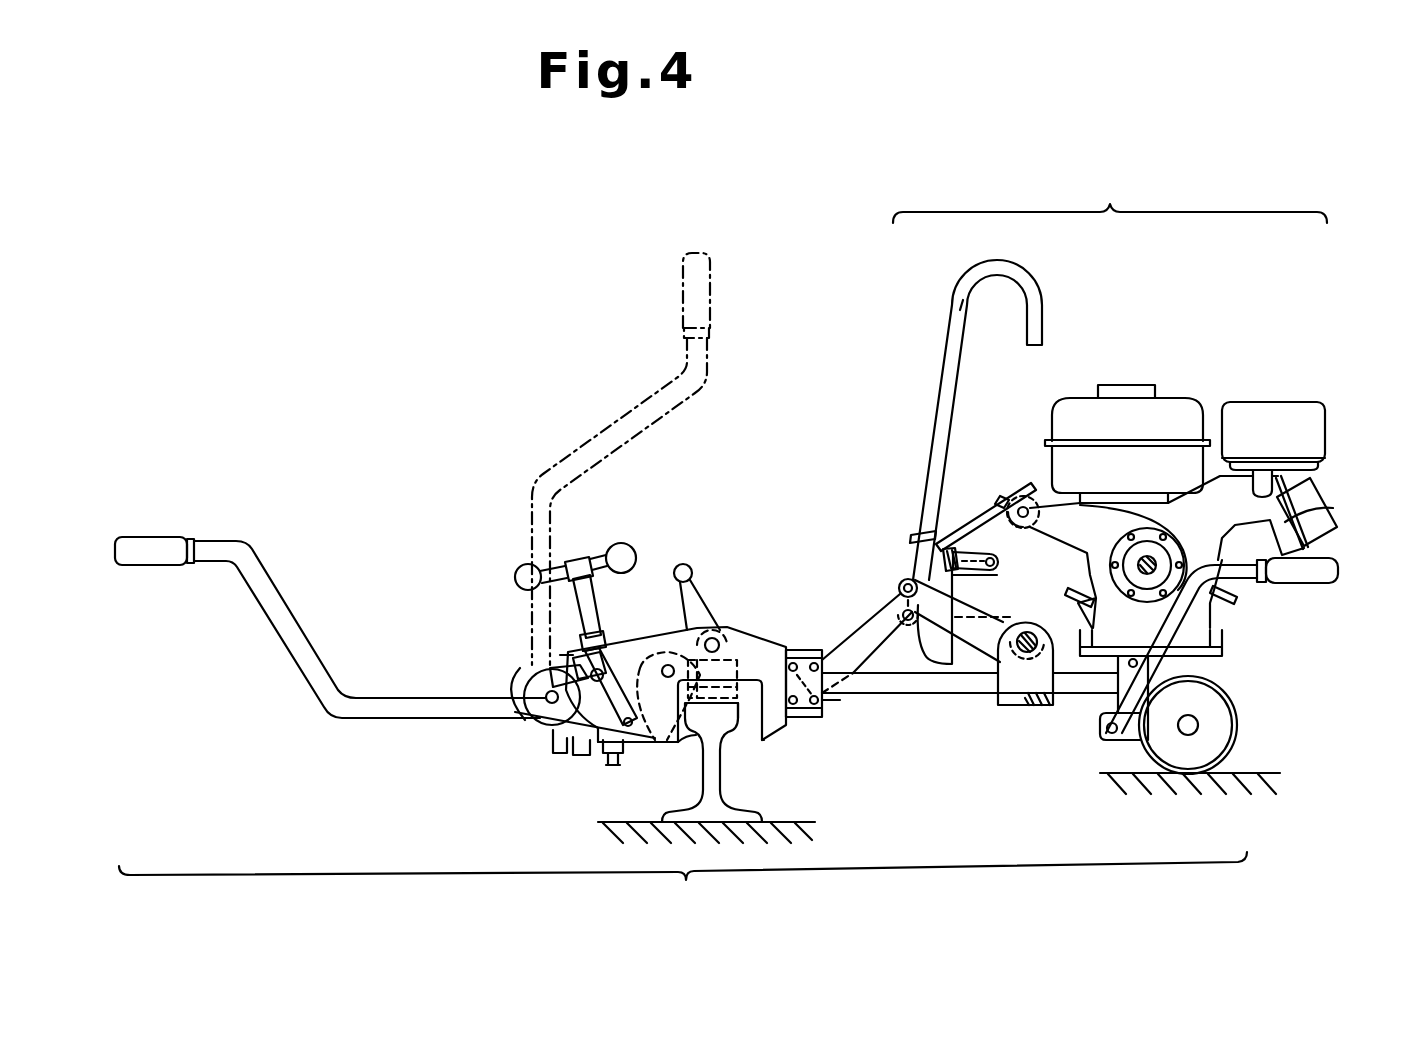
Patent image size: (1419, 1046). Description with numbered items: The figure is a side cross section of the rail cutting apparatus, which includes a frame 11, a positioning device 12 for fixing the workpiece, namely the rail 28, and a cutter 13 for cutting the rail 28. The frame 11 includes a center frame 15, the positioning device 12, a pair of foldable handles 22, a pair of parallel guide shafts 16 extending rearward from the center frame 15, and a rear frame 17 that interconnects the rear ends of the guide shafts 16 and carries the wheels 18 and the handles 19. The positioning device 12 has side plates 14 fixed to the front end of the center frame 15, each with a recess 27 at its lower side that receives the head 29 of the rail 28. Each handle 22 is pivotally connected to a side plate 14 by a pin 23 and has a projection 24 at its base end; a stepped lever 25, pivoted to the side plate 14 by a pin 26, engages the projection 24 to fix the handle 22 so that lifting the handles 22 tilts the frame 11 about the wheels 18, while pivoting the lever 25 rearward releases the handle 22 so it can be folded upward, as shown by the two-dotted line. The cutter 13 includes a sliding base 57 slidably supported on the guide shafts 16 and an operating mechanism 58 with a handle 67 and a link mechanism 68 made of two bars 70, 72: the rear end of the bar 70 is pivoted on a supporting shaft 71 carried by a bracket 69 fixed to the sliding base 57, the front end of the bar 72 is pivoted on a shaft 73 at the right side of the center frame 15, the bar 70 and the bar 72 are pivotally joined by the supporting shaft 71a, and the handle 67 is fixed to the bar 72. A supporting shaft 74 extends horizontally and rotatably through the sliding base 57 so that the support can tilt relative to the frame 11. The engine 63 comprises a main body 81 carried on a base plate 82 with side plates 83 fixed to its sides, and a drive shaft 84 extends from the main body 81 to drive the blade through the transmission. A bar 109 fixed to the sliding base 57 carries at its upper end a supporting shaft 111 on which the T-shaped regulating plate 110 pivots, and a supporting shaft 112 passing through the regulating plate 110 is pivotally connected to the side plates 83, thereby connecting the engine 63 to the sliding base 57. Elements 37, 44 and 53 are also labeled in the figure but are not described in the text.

The frame 11 is at (683, 887).
The positioning device 12 is at (783, 732).
The cutter 13 is at (1110, 192).
The side plate 14 is at (765, 642).
The center frame 15 is at (848, 703).
The guide shaft 16 is at (875, 700).
The rear frame 17 is at (1110, 685).
The wheel 18 is at (1225, 740).
The handle 19 is at (1107, 742).
The foldable handle 22 is at (585, 437).
The pin 23 is at (535, 720).
The projection 24 is at (548, 742).
The lever 25 is at (618, 652).
The pin 26 is at (628, 748).
The recess 27 is at (745, 742).
The rail 28 is at (700, 801).
The head 29 is at (727, 722).
The jaw plate 37 is at (683, 750).
The operating lever 44 is at (596, 604).
The lock lever 53 is at (704, 590).
The sliding base 57 is at (1000, 706).
The operating mechanism 58 is at (912, 533).
The engine 63 is at (1210, 392).
The handle 67 is at (948, 324).
The link mechanism 68 is at (856, 632).
The bracket 69 is at (930, 666).
The bar 70 is at (978, 576).
The supporting shaft 71 is at (998, 561).
The supporting shaft 71a is at (900, 590).
The bar 72 is at (843, 650).
The shaft 73 is at (814, 720).
The supporting shaft 74 is at (1030, 690).
The main body 81 is at (1320, 508).
The base plate 82 is at (1228, 652).
The side plate 83 is at (1095, 528).
The drive shaft 84 is at (1145, 577).
The bar 109 is at (985, 645).
The regulating plate 110 is at (955, 522).
The supporting shaft 111 is at (905, 572).
The supporting shaft 112 is at (1012, 492).